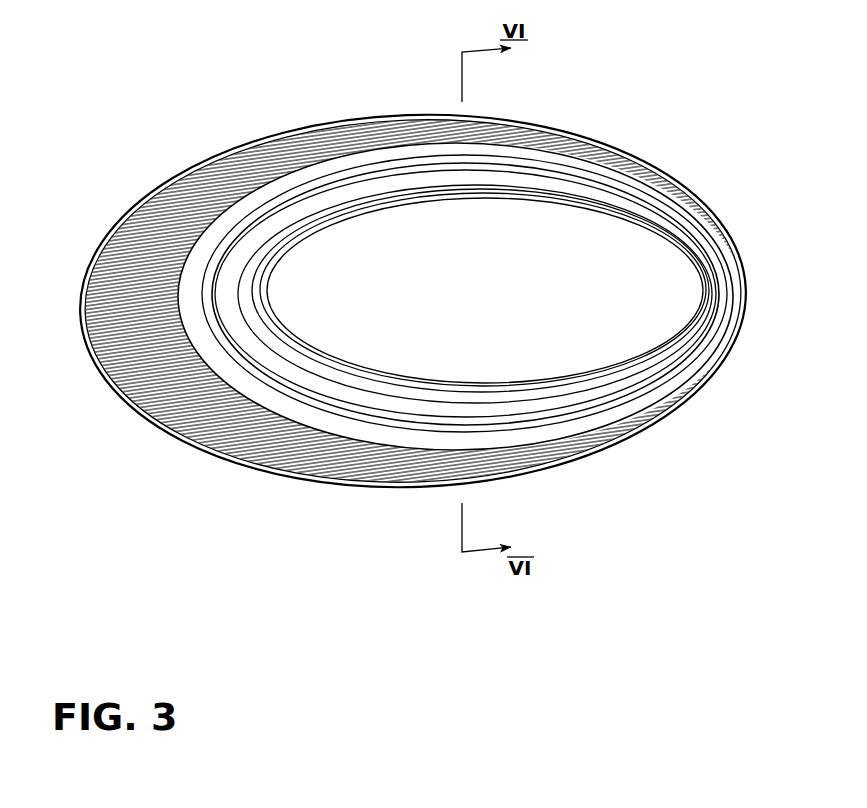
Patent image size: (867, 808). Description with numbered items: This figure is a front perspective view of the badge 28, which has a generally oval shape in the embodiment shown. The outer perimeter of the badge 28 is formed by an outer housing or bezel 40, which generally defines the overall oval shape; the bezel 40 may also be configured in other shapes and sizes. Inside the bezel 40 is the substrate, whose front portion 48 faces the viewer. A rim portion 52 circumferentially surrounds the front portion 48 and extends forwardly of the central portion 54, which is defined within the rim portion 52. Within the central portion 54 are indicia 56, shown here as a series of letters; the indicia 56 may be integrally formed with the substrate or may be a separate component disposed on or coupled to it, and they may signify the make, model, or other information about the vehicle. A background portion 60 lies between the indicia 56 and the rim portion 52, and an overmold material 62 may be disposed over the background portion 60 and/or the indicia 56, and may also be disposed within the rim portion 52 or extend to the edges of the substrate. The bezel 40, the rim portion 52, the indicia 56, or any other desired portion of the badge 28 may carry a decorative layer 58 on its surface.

The badge 28 is at (167, 161).
The bezel 40 is at (126, 292).
The front portion 48 is at (319, 304).
The rim portion 52 is at (713, 258).
The central portion 54 is at (474, 331).
The indicia 56 is at (430, 243).
The decorative layer 58 is at (336, 458).
The background portion 60 is at (591, 219).
The overmold material 62 is at (668, 264).